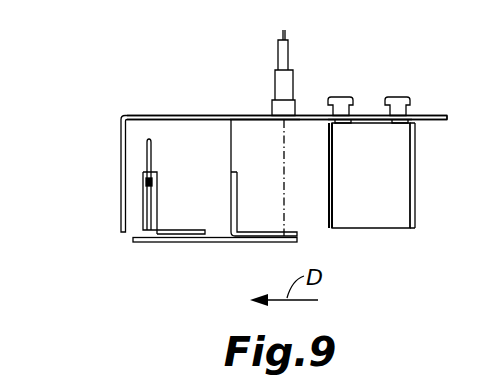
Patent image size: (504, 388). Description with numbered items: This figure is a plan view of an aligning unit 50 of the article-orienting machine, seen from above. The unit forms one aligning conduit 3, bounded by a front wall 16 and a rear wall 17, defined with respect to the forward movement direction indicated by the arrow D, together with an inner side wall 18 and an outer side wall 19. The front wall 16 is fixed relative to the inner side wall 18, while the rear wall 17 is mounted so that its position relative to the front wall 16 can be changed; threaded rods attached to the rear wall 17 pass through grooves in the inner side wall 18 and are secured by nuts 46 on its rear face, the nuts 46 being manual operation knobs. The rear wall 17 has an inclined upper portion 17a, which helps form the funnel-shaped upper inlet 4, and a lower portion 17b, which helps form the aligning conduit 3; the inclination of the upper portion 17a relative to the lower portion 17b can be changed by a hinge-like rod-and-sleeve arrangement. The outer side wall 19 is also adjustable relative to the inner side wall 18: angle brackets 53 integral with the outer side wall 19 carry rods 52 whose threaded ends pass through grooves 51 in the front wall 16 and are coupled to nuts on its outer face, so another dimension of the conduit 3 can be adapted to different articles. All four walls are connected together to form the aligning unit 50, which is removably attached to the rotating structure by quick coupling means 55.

The aligning conduit 3 is at (312, 167).
The funnel-shaped upper inlet 4 is at (255, 132).
The front wall 16 is at (121, 155).
The rear wall 17 is at (378, 200).
The inclined upper portion 17a is at (398, 176).
The lower portion 17b is at (329, 180).
The inner side wall 18 is at (193, 115).
The outer side wall 19 is at (218, 241).
The nuts 46 is at (340, 98).
The aligning unit 50 is at (319, 73).
The grooves 51 is at (146, 149).
The rods 52 is at (144, 183).
The angle brackets 53 is at (152, 208).
The quick coupling means 55 is at (278, 66).